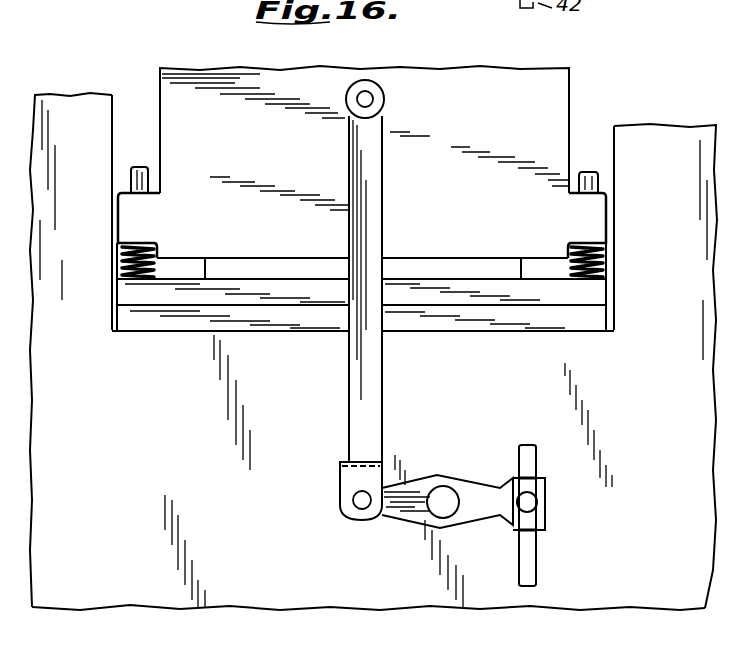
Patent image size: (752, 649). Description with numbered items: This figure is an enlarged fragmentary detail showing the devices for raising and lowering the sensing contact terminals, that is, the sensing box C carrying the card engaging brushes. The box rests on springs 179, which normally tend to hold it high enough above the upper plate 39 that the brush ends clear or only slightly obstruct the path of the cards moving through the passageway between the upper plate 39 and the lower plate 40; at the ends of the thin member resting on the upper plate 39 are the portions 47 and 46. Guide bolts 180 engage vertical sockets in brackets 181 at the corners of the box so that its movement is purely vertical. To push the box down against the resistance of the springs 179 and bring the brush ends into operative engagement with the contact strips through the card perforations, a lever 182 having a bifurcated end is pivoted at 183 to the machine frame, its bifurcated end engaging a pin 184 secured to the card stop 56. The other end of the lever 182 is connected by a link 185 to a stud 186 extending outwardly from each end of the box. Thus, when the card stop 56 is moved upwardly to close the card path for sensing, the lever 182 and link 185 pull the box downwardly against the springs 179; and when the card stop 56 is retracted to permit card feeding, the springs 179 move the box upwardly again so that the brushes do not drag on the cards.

The cover C is at (456, 82).
The guide bolts 180 is at (131, 173).
The brackets 181 is at (130, 213).
The springs 179 is at (120, 258).
The bar end 47 is at (180, 271).
The bar end 46 is at (547, 274).
The upper plate 39 is at (140, 290).
The lower plate 40 is at (167, 322).
The stud 186 is at (357, 98).
The link 185 is at (358, 383).
The lever 182 is at (412, 505).
The pivot 183 is at (443, 500).
The card stop 56 is at (527, 473).
The pin 184 is at (537, 501).